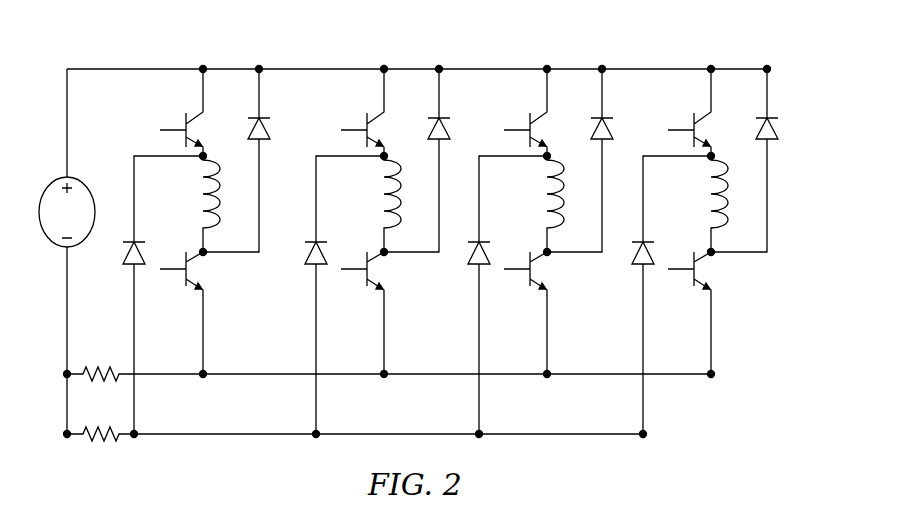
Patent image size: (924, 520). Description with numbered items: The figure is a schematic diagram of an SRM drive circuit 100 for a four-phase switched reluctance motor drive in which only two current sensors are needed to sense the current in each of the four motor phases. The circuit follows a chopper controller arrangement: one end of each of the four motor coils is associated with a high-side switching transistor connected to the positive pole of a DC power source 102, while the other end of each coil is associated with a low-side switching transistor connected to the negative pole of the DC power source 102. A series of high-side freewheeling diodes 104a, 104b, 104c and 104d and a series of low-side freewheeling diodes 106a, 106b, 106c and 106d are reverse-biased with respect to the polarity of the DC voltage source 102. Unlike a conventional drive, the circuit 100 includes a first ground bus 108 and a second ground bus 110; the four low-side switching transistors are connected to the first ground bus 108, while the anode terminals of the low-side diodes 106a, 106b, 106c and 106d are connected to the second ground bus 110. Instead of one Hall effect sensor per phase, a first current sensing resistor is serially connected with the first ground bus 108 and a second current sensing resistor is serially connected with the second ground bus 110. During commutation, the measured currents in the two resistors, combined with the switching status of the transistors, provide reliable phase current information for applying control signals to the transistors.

The SRM drive circuit 100 is at (152, 51).
The DC power source 102 is at (83, 178).
The high-side freewheeling diode 104a is at (269, 126).
The high-side freewheeling diode 104b is at (449, 126).
The high-side freewheeling diode 104c is at (612, 126).
The high-side freewheeling diode 104d is at (757, 132).
The low-side freewheeling diode 106a is at (127, 269).
The low-side freewheeling diode 106b is at (309, 268).
The low-side freewheeling diode 106c is at (472, 268).
The low-side freewheeling diode 106d is at (636, 267).
The first ground bus 108 is at (673, 374).
The second ground bus 110 is at (575, 434).